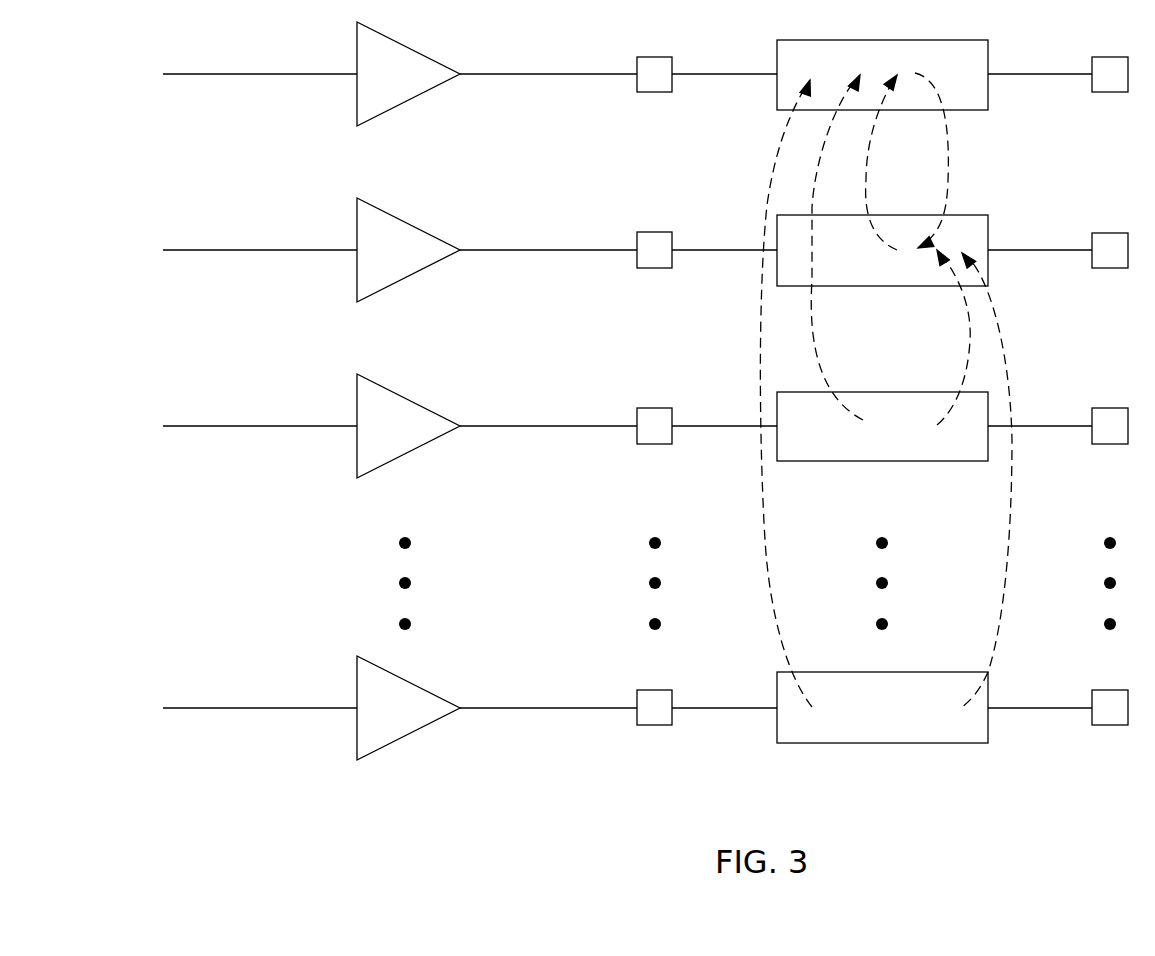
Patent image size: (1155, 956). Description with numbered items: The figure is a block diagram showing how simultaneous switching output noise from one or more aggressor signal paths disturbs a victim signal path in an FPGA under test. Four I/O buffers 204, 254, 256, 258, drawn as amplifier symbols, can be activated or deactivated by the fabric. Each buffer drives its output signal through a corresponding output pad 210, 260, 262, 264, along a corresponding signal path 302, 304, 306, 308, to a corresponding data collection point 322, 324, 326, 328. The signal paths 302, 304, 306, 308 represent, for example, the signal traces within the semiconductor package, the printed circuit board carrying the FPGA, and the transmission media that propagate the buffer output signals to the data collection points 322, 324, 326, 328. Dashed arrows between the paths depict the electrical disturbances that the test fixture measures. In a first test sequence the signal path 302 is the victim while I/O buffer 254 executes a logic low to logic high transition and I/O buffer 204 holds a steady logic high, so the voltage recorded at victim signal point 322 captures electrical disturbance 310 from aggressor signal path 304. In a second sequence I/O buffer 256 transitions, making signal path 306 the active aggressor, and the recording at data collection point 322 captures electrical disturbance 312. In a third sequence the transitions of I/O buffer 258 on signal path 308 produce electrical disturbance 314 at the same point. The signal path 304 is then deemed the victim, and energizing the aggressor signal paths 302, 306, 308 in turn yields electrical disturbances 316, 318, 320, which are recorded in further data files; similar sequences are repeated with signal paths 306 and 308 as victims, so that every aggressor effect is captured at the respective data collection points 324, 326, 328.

The I/O buffer 204 is at (430, 93).
The I/O buffer 254 is at (430, 269).
The I/O buffer 256 is at (430, 445).
The I/O buffer 258 is at (430, 727).
The output pad 210 is at (655, 92).
The output pad 260 is at (655, 268).
The output pad 262 is at (655, 444).
The output pad 264 is at (655, 725).
The signal path 302 is at (793, 40).
The signal path 304 is at (828, 287).
The signal path 306 is at (810, 461).
The signal path 308 is at (810, 743).
The electrical disturbance 310 is at (868, 120).
The electrical disturbance 312 is at (825, 140).
The electrical disturbance 314 is at (760, 317).
The electrical disturbance 316 is at (948, 118).
The electrical disturbance 318 is at (967, 300).
The electrical disturbance 320 is at (1012, 472).
The data collection point 322 is at (1117, 92).
The data collection point 324 is at (1117, 268).
The data collection point 326 is at (1117, 444).
The data collection point 328 is at (1117, 725).